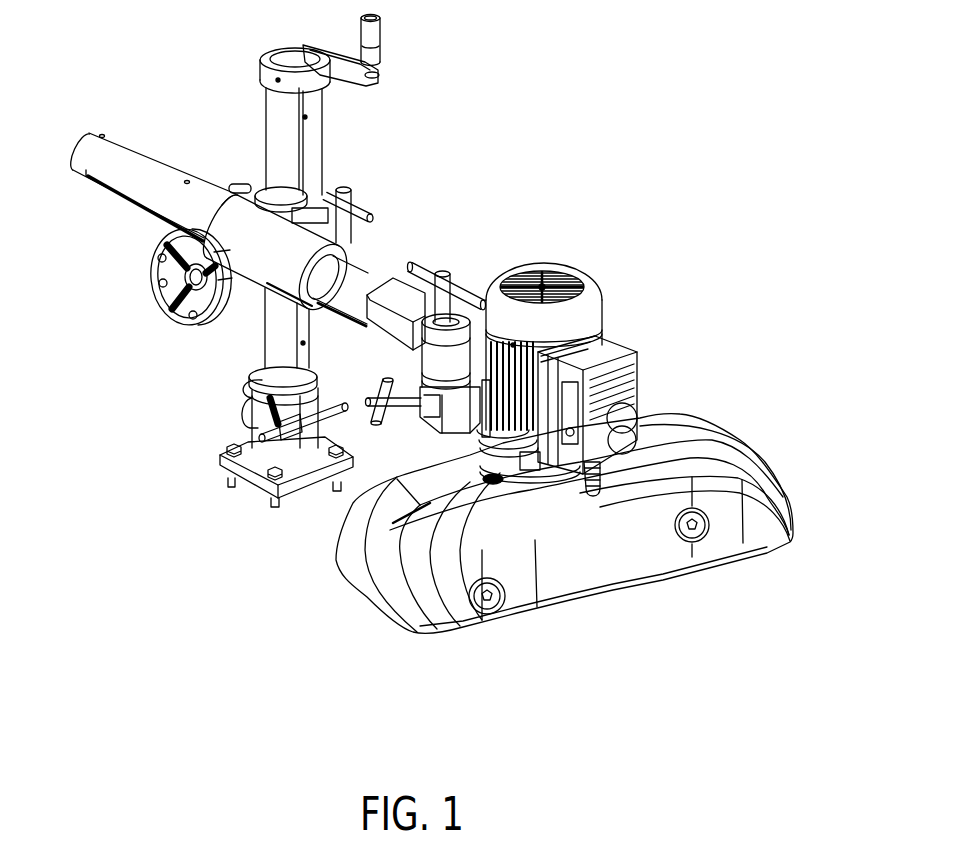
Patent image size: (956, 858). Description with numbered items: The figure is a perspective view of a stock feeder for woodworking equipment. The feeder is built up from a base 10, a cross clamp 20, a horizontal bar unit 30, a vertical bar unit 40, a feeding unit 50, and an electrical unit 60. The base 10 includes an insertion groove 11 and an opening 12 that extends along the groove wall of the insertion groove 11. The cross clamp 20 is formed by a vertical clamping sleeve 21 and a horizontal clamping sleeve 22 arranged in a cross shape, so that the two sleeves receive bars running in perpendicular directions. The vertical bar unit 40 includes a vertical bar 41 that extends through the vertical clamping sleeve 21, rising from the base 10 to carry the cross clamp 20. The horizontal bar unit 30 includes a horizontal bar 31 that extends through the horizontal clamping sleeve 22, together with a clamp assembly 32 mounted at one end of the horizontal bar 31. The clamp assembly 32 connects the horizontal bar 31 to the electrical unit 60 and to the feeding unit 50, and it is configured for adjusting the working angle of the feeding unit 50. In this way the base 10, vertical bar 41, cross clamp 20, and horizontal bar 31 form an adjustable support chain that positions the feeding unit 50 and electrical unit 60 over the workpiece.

The base 10 is at (309, 512).
The insertion groove 11 is at (268, 357).
The opening 12 is at (243, 397).
The cross clamp 20 is at (203, 213).
The vertical clamping sleeve 21 is at (264, 290).
The horizontal clamping sleeve 22 is at (230, 197).
The horizontal bar unit 30 is at (122, 133).
The horizontal bar 31 is at (363, 277).
The clamp assembly 32 is at (467, 330).
The vertical bar unit 40 is at (330, 128).
The vertical bar 41 is at (300, 335).
The feeding unit 50 is at (712, 413).
The electrical unit 60 is at (595, 287).